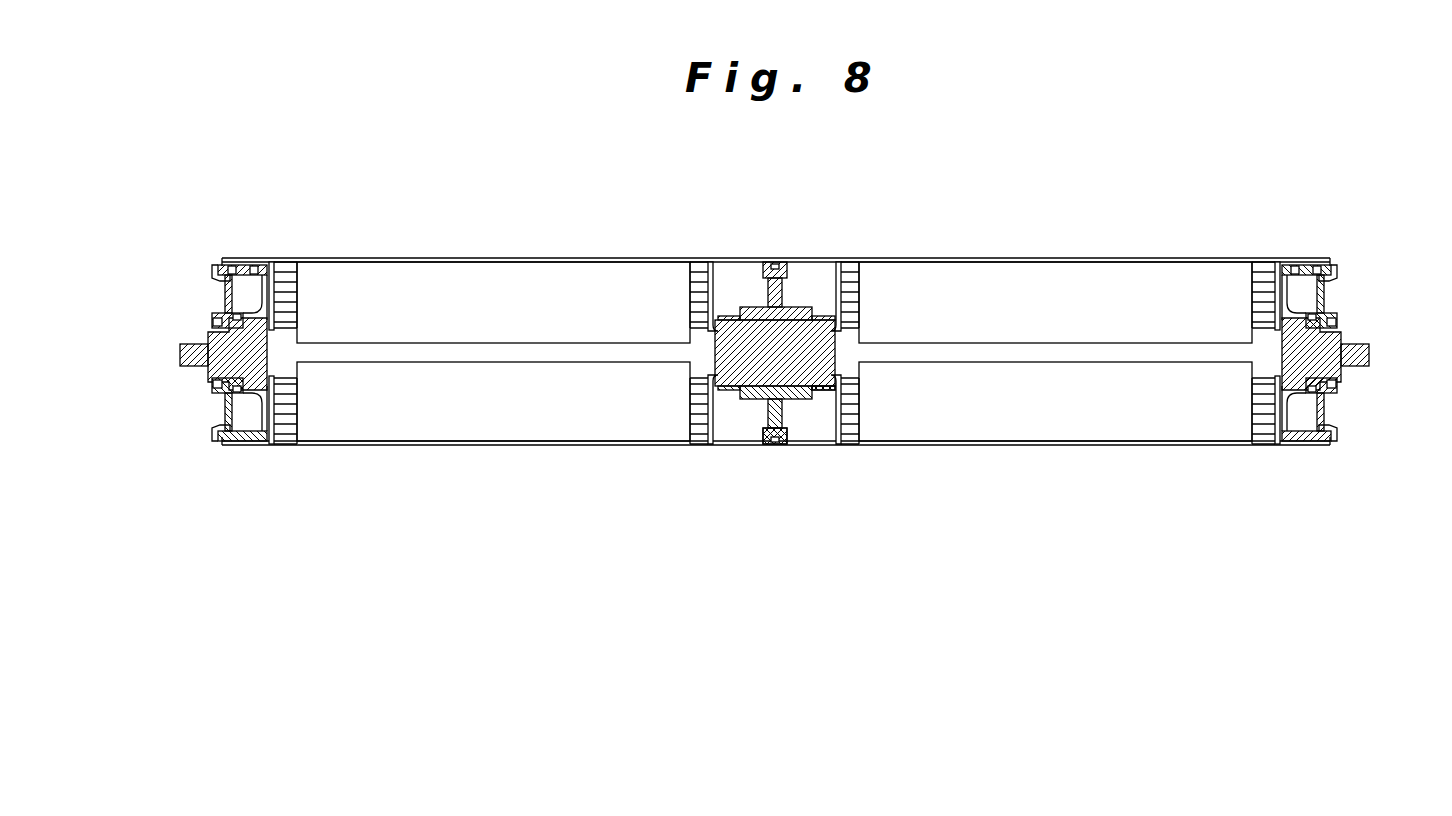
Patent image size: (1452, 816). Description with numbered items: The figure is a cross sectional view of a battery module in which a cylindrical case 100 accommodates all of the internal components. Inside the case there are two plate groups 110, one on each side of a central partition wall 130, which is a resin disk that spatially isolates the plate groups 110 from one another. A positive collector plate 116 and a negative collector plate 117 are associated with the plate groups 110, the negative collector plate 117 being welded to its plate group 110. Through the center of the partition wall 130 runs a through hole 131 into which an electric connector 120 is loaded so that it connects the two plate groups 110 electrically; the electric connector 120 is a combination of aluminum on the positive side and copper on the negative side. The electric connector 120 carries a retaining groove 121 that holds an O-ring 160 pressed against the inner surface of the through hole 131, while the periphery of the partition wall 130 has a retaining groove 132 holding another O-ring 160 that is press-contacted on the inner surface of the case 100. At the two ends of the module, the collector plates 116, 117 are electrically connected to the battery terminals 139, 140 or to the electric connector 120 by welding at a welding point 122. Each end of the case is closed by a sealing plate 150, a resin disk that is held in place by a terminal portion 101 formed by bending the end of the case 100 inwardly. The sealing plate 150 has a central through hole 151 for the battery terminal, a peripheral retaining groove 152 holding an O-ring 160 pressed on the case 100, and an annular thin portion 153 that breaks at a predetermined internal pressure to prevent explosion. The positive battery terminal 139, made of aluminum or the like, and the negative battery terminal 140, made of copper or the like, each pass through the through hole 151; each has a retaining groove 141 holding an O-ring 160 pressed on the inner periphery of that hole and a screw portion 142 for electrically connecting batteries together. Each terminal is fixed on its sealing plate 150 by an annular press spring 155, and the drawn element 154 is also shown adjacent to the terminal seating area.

The cylindrical case 100 is at (1050, 446).
The terminal portion 101 is at (224, 438).
The plate group 110 is at (467, 283).
The positive collector plate 116 is at (266, 282).
The negative collector plate 117 is at (713, 266).
The electric connector 120 is at (710, 323).
The retaining groove 121 is at (767, 390).
The welding point 122 is at (256, 392).
The partition wall 130 is at (785, 400).
The through hole 131 is at (820, 390).
The retaining groove 132 is at (772, 440).
The battery terminal 139 is at (180, 354).
The battery terminal 140 is at (1369, 354).
The retaining groove 141 is at (213, 384).
The screw portion 142 is at (192, 370).
The sealing plate 150 is at (222, 268).
The through hole 151 is at (222, 388).
The retaining groove 152 is at (252, 438).
The annular thin portion 153 is at (224, 303).
The upper bearing 154 is at (221, 318).
The annular press spring 155 is at (212, 331).
The O-ring 160 is at (254, 267).